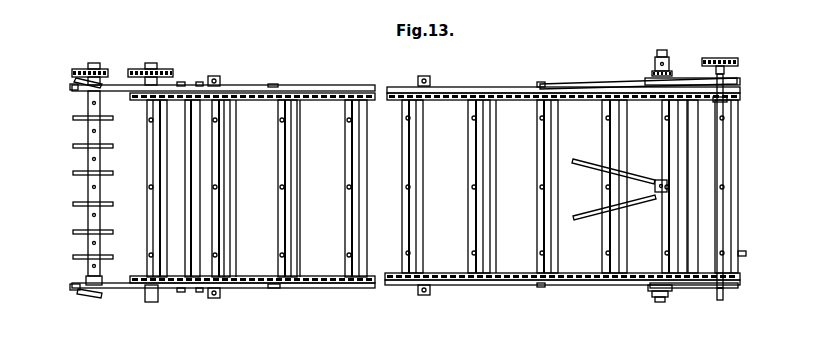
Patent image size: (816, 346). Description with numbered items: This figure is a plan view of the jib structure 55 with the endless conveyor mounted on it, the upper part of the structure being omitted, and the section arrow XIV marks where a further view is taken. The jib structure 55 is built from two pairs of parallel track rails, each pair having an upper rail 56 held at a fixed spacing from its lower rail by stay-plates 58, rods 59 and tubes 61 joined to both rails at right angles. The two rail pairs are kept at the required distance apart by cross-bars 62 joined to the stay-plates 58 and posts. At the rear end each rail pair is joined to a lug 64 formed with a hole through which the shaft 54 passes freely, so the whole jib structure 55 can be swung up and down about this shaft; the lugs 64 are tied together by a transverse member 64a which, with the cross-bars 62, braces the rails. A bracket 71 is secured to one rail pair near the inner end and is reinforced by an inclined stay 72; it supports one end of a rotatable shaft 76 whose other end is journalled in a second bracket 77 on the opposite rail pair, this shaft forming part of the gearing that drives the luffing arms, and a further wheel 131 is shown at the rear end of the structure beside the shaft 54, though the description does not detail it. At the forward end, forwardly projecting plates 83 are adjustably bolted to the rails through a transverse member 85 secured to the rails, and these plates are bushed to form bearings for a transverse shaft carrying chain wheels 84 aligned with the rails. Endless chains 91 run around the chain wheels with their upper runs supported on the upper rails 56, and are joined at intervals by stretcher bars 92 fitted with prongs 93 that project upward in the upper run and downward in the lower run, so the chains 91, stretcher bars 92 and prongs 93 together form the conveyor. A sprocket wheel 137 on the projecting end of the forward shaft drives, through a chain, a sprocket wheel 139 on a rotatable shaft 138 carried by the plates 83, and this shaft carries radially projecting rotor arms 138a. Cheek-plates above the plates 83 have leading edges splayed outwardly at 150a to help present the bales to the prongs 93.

The shaft 54 is at (724, 165).
The jib structure 55 is at (326, 86).
The upper rail 56 is at (324, 102).
The stay-plates 58 is at (274, 84).
The rods 59 is at (541, 82).
The tubes 61 is at (220, 76).
The cross-bars 62 is at (266, 160).
The lug 64 is at (696, 78).
The transverse member 64a is at (686, 210).
The bracket 71 is at (650, 72).
The inclined stay 72 is at (582, 80).
The rotatable shaft 76 is at (660, 144).
The second bracket 77 is at (649, 293).
The forwardly projecting plates 83 is at (70, 89).
The chain wheels 84 is at (200, 80).
The transverse member 85 is at (190, 181).
The endless chains 91 is at (310, 275).
The stretcher bars 92 is at (420, 165).
The prongs or tines 93 is at (285, 187).
The sprocket 131 is at (733, 58).
The sprocket wheel 137 is at (166, 63).
The rotatable shaft 138 is at (101, 274).
The rotor arms 138a is at (108, 152).
The sprocket wheel 139 is at (76, 68).
The splayed leading edge portions 150a is at (110, 74).
The section view arrow XIV is at (70, 189).